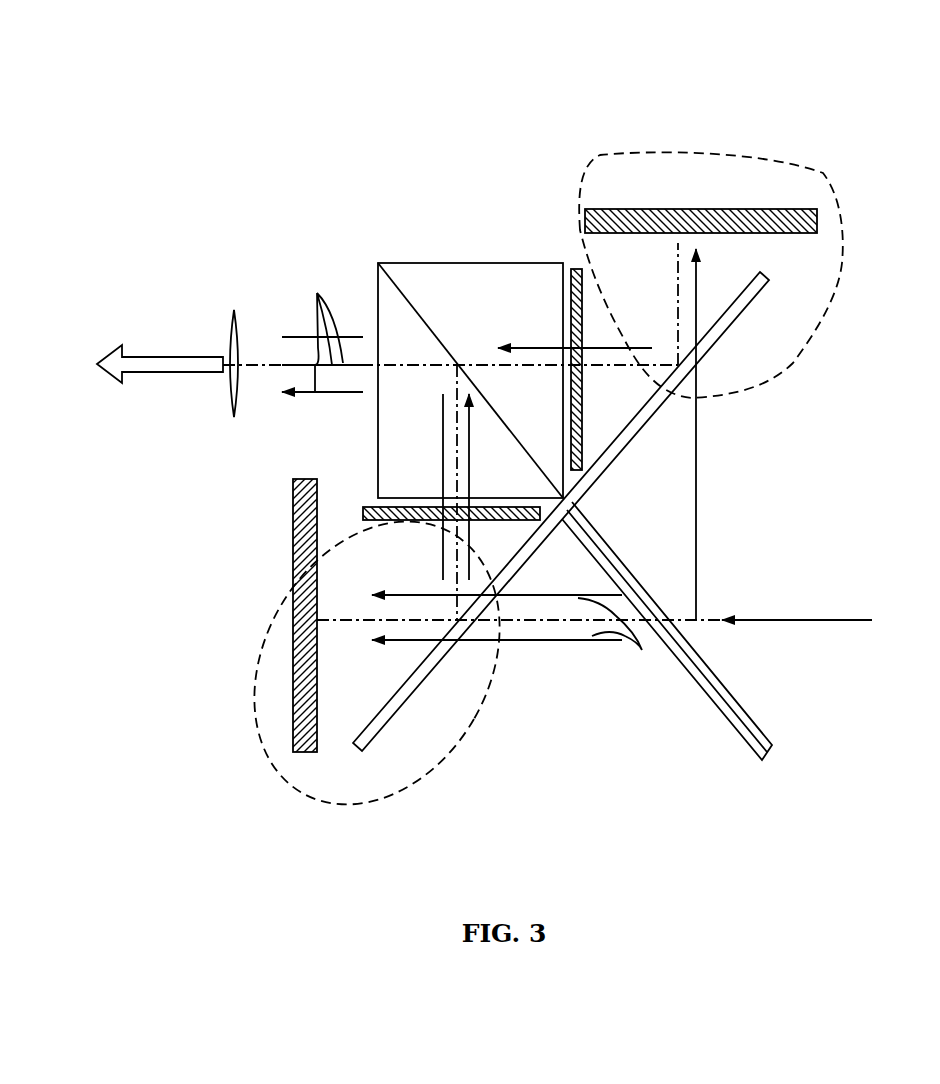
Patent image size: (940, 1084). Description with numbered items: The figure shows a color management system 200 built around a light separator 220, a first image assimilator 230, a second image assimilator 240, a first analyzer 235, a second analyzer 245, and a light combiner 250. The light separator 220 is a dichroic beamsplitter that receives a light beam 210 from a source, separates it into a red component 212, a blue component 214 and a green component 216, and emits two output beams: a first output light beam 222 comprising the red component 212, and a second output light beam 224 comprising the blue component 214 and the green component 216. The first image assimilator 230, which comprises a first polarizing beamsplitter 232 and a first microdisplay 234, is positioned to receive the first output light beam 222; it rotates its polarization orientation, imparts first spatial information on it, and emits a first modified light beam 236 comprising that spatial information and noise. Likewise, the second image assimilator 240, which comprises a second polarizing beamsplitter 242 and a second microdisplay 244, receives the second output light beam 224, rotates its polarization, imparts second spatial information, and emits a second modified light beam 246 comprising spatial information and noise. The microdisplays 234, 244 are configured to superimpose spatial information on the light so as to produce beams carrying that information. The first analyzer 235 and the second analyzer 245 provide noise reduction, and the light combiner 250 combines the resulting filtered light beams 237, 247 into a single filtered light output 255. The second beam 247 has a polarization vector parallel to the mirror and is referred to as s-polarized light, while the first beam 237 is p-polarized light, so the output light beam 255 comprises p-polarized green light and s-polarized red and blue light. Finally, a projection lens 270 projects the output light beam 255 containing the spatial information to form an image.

The color management system 200 is at (808, 128).
The light beam 210 is at (872, 620).
The red component 212 is at (696, 466).
The blue component 214 is at (543, 593).
The green component 216 is at (548, 642).
The light separator 220 is at (695, 680).
The first output light beam 222 is at (694, 494).
The second output light beam 224 is at (614, 638).
The first image assimilator 230 is at (805, 177).
The first polarizing beamsplitter 232 is at (760, 298).
The first microdisplay 234 is at (650, 208).
The first analyzer 235 is at (575, 273).
The first modified light beam 236 is at (632, 348).
The first filtered light beam 237 is at (537, 343).
The second image assimilator 240 is at (263, 758).
The second polarizing beamsplitter 242 is at (395, 723).
The second microdisplay 244 is at (317, 690).
The second analyzer 245 is at (363, 508).
The second modified light beam 246 is at (468, 542).
The second filtered light beam 247 is at (445, 448).
The light combiner 250 is at (435, 332).
The filtered light output 255 is at (322, 331).
The projection lens 270 is at (234, 310).